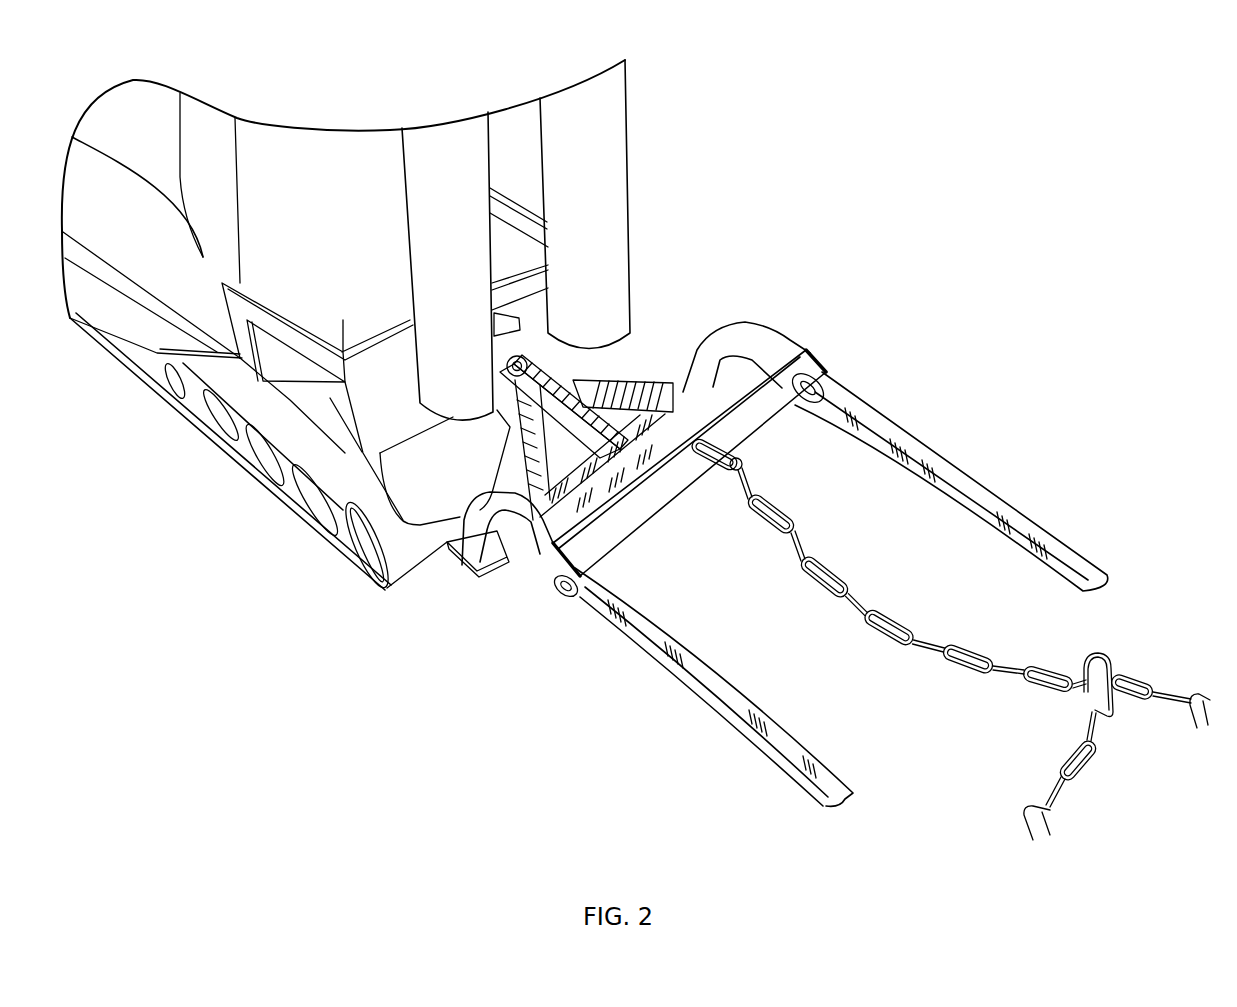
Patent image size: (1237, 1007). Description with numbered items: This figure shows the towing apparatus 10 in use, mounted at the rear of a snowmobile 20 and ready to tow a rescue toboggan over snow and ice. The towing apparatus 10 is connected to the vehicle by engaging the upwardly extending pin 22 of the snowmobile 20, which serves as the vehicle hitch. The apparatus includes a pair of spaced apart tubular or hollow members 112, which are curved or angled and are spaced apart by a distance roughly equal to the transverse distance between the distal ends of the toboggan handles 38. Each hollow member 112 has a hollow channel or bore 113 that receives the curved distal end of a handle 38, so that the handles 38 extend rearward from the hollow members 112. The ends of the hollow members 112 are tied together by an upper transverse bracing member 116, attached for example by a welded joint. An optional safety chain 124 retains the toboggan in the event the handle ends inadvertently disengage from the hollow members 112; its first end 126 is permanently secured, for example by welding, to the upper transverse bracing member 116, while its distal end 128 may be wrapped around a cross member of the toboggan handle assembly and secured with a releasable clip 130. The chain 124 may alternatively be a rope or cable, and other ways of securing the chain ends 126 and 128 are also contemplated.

The towing apparatus 10 is at (874, 299).
The snowmobile 20 is at (182, 482).
The upwardly extending pin 22 is at (630, 350).
The handles 38 is at (684, 660).
The tubular or hollow members 112 is at (755, 337).
The hollow channel or bore 113 is at (830, 380).
The upper transverse bracing member 116 is at (614, 528).
The safety chain 124 is at (853, 598).
The first end of the safety chain 126 is at (741, 460).
The distal end of the safety chain 128 is at (1058, 775).
The releasable clip 130 is at (1114, 660).